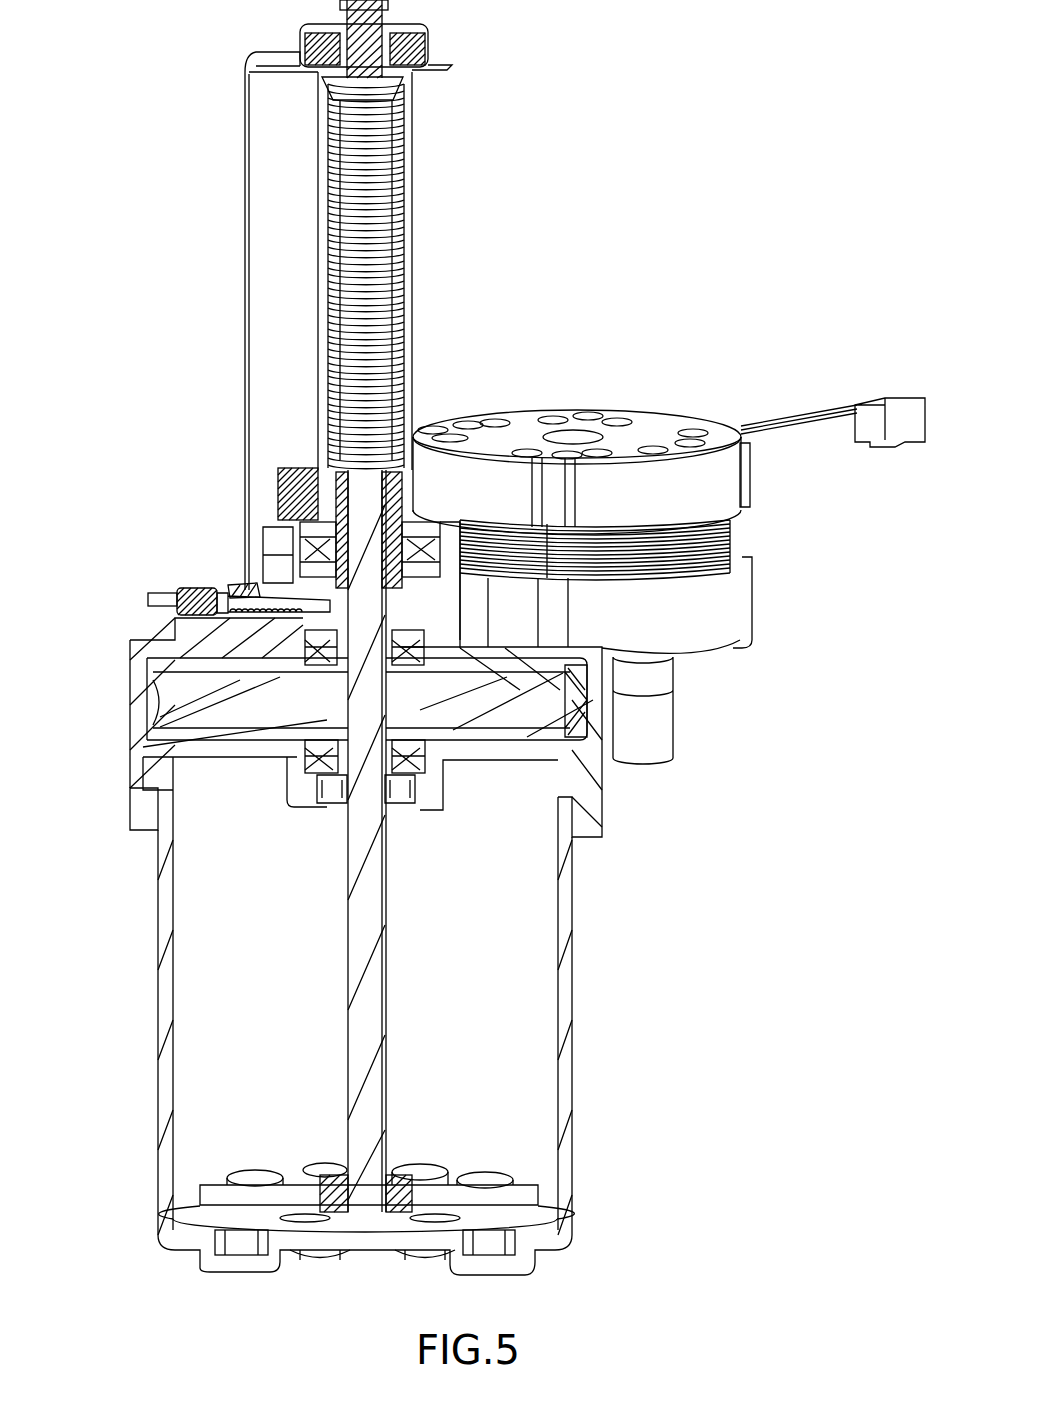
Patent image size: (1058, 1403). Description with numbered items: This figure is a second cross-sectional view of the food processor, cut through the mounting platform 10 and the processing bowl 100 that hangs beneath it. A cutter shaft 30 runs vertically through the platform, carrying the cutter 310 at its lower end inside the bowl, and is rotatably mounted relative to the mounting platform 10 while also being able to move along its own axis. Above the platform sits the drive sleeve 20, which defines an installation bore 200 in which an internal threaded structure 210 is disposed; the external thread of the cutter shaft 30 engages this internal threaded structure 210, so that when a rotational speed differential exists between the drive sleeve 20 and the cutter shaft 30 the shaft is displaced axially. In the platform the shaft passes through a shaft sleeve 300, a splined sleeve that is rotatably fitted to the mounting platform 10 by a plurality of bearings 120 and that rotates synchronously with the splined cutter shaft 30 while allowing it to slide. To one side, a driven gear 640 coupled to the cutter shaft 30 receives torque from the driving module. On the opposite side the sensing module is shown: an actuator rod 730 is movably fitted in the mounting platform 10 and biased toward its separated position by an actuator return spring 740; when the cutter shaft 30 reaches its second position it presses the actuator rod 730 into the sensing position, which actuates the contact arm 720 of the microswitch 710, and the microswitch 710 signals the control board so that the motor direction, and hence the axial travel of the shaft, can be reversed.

The drive sleeve 20 is at (325, 243).
The installation bore 200 is at (325, 290).
The internal threaded structure 210 is at (325, 330).
The actuator return spring 740 is at (262, 590).
The actuator rod 730 is at (220, 587).
The contact arm 720 is at (203, 588).
The microswitch 710 is at (178, 585).
The bearings 120 is at (337, 662).
The shaft sleeve 300 is at (337, 665).
The driven gear 640 is at (578, 707).
The mounting platform 10 is at (592, 772).
The processing bowl 100 is at (590, 827).
The cutter shaft 30 is at (372, 1068).
The cutter 310 is at (530, 1193).